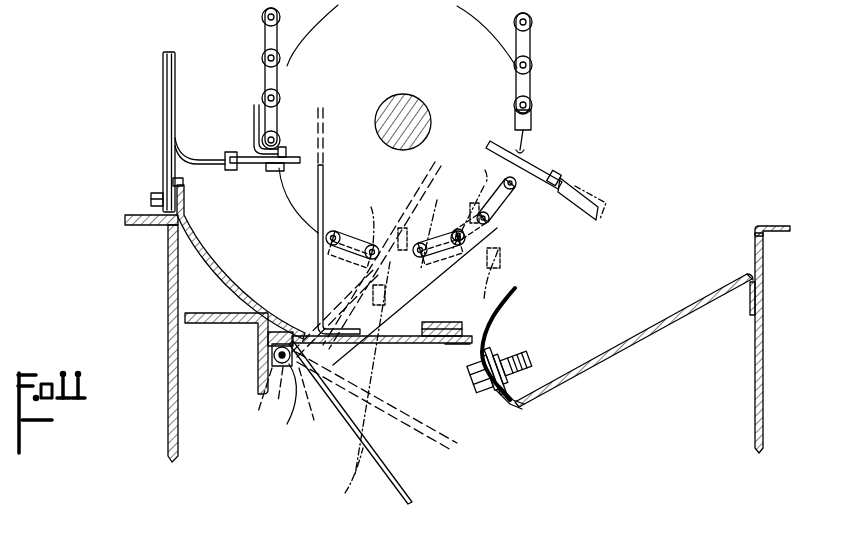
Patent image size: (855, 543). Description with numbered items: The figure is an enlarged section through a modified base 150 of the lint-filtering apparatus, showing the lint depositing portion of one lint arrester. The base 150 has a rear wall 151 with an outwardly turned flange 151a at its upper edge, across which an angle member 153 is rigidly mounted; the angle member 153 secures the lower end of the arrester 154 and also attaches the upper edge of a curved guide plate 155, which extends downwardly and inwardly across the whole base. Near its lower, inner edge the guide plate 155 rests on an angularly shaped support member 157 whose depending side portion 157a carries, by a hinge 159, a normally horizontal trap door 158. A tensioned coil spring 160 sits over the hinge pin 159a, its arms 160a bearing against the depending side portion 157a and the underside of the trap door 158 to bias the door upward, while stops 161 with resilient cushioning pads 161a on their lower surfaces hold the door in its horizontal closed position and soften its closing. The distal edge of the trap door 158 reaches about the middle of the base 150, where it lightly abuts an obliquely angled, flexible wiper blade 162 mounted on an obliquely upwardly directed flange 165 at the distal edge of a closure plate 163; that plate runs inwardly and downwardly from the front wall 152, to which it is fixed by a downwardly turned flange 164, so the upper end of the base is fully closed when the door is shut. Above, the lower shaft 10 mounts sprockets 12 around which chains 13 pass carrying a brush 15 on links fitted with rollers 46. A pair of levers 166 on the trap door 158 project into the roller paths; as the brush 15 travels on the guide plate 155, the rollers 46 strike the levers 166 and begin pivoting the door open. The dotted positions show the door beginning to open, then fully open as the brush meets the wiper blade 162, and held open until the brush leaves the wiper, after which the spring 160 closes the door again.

The lower shaft 10 is at (408, 97).
The sprockets 12 is at (522, 135).
The chains 13 is at (534, 62).
The brush 15 is at (184, 150).
The rollers 46 is at (272, 91).
The modified base 150 is at (417, 274).
The rear wall 151 is at (167, 415).
The outwardly turned flange 151a is at (132, 214).
The front wall 152 is at (752, 394).
The angle member 153 is at (150, 213).
The arrester 154 is at (163, 82).
The curved guide plate 155 is at (205, 228).
The angularly shaped support member 157 is at (230, 323).
The depending side portion 157a is at (260, 362).
The trap door 158 is at (418, 348).
The hinge 159 is at (291, 401).
The hinge pin 159a is at (276, 401).
The tensioned coil spring 160 is at (336, 350).
The spring arms 160a is at (244, 415).
The stops 161 is at (447, 322).
The cushioning pads 161a is at (453, 346).
The wiper blade 162 is at (503, 325).
The closure plate 163 is at (690, 315).
The downwardly turned flange 164 is at (750, 303).
The obliquely upwardly directed flange 165 is at (505, 402).
The levers 166 is at (430, 197).